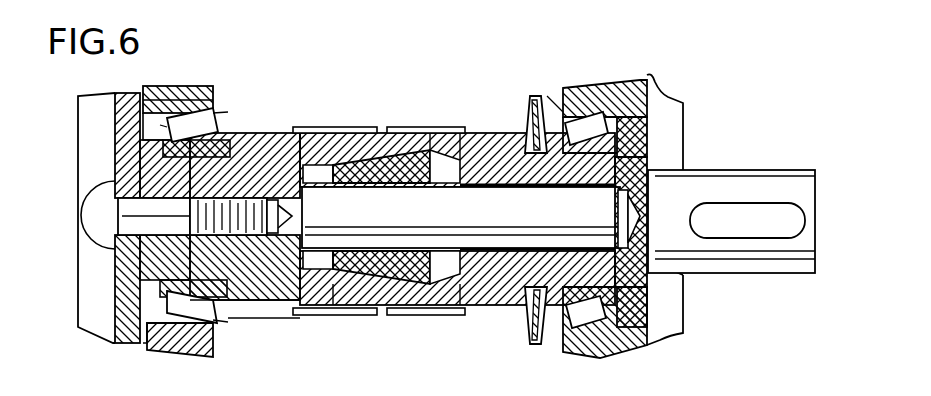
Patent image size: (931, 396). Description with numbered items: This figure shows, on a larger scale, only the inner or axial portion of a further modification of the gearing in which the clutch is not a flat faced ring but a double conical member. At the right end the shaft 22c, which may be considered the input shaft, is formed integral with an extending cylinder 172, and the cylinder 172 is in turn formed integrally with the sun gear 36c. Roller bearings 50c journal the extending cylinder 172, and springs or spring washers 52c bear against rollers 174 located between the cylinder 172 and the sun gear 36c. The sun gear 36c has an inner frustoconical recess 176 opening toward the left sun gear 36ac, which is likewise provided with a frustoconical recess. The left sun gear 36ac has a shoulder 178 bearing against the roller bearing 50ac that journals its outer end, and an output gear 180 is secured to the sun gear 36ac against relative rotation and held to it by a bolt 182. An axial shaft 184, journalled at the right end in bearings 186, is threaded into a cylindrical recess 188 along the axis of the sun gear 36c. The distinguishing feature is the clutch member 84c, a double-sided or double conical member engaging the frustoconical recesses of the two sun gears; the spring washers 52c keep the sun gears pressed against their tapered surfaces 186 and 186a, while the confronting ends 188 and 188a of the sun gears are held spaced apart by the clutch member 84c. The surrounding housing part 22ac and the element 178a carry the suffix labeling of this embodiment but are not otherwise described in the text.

The housing 22ac is at (137, 177).
The roller bearing 50ac is at (207, 84).
The output gear 180 is at (133, 347).
The sun gear 36ac is at (327, 126).
The tapered surface 186a is at (317, 127).
The clutch member 84c is at (358, 127).
The bearings / tapered surface 186 is at (417, 126).
The sun gear 36c is at (435, 126).
The inner frustoconical recess 176 is at (462, 126).
The extending cylinder 172 is at (555, 150).
The roller bearings 50c is at (597, 80).
The shaft 22c is at (710, 173).
The cylindrical recess / confronting end 188 is at (403, 314).
The axial shaft 184 is at (484, 225).
The springs / spring washers 52c is at (530, 343).
The rollers 174 is at (507, 300).
The confronting end 188a is at (373, 313).
The roller 178a is at (312, 315).
The bolt 182 is at (245, 302).
The shoulder 178 is at (233, 318).